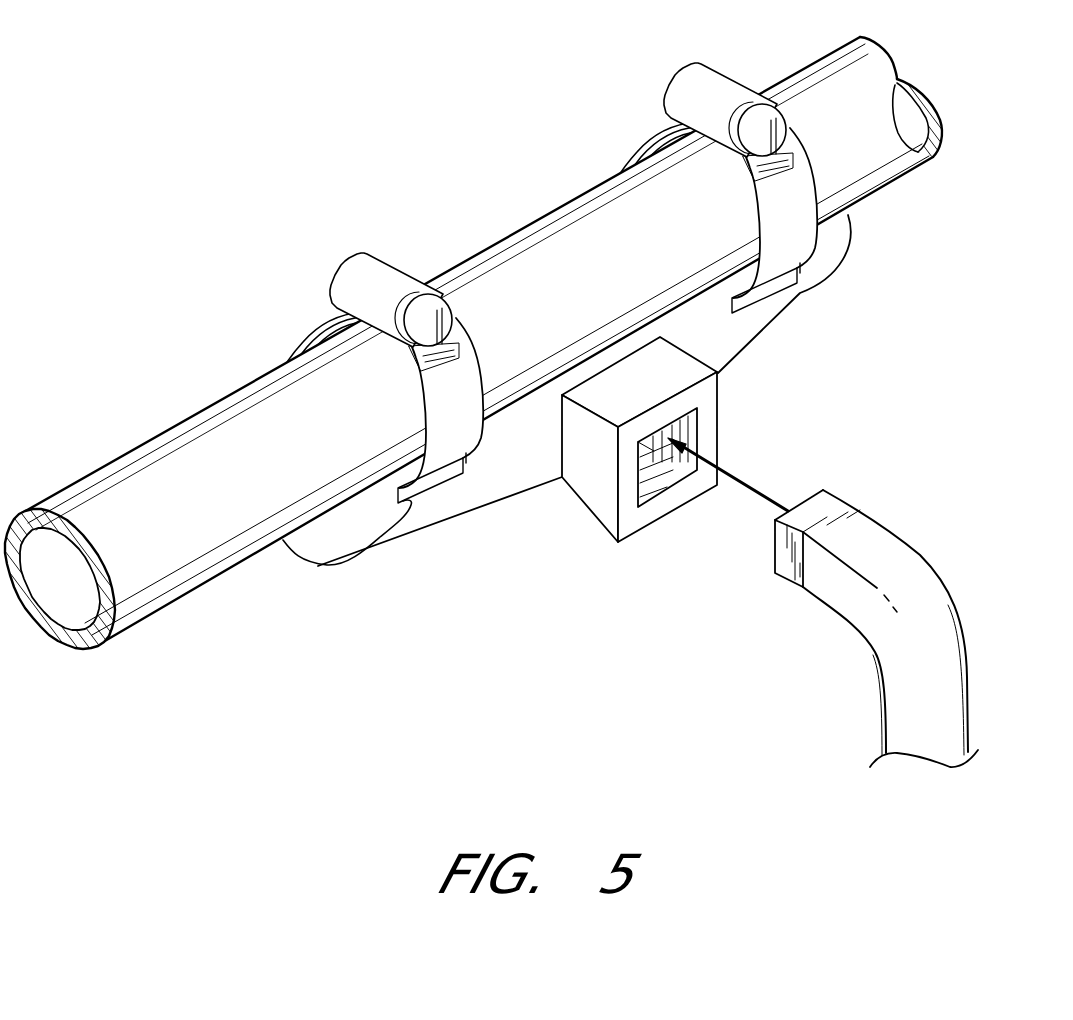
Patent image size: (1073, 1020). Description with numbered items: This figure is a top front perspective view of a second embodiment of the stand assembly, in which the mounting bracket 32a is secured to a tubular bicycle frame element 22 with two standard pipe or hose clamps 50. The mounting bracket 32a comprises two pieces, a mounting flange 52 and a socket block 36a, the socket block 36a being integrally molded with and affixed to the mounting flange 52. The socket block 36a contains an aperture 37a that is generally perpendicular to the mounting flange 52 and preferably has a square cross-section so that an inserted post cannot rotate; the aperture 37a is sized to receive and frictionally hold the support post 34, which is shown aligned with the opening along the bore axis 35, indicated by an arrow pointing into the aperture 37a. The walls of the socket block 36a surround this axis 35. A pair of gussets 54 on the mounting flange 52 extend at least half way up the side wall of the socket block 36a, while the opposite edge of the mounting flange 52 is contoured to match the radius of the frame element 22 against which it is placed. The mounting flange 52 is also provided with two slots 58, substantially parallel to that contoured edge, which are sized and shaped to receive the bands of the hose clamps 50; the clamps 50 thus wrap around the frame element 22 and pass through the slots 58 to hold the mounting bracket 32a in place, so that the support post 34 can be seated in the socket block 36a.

The frame element 22 is at (173, 437).
The hose clamp 50 is at (373, 273).
The slot 58 is at (324, 556).
The gusset 54 is at (477, 510).
The mounting flange 52 is at (597, 437).
The mounting bracket 32a is at (589, 365).
The socket block 36a is at (631, 480).
The aperture 37a is at (663, 483).
The bore axis 35 is at (743, 484).
The support post 34 is at (967, 657).